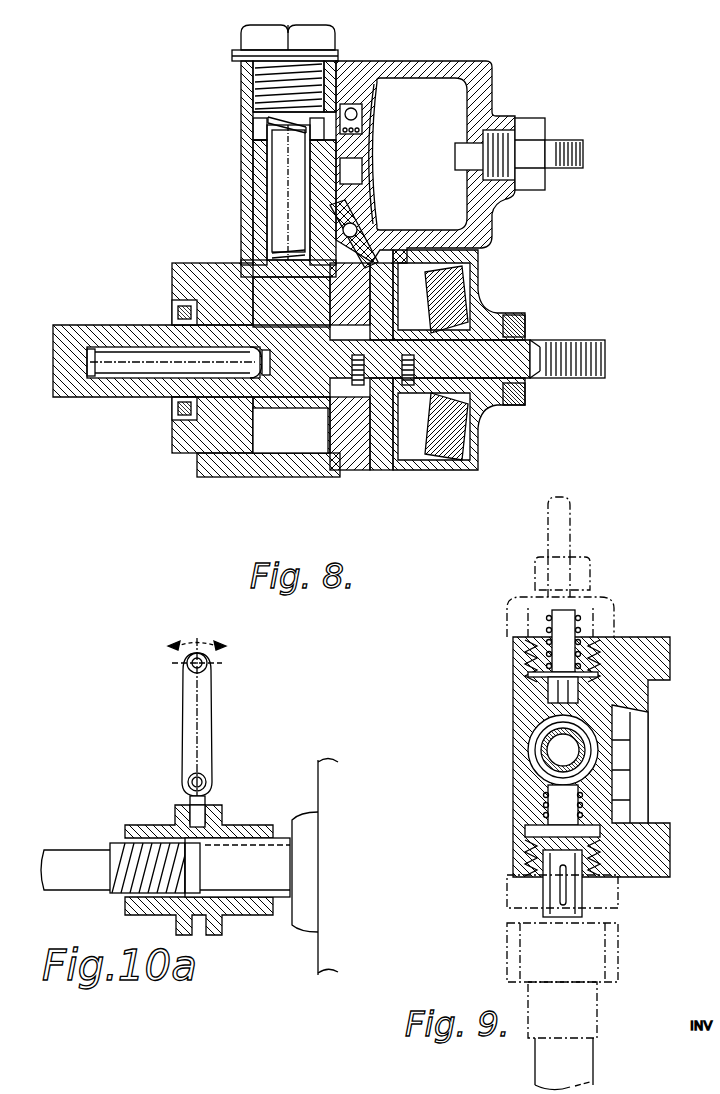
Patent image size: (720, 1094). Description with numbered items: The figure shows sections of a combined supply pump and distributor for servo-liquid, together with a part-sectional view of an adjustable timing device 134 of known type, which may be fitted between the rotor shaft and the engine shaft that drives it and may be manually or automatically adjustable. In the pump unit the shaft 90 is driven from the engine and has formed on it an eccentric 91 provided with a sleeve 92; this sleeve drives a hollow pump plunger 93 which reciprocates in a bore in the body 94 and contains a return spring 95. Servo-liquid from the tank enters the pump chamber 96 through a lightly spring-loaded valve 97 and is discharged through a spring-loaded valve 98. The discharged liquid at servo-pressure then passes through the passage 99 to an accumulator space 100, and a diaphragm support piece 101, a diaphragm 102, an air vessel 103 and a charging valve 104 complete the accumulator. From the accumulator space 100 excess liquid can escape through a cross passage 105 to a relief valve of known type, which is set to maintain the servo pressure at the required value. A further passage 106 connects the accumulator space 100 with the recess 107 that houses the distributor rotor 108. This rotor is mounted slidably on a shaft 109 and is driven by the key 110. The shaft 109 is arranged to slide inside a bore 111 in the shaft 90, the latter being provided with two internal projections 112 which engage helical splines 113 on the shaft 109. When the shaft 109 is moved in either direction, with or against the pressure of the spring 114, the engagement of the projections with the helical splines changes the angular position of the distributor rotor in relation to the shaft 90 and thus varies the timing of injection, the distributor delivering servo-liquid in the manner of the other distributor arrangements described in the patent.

In FIG. 8, the shaft 90 is at (70, 333).
In FIG. 8, the eccentric 91 is at (257, 297).
In FIG. 8, the sleeve 92 is at (255, 285).
In FIG. 8, the hollow pump plunger 93 is at (267, 197).
In FIG. 8, the body 94 is at (253, 187).
In FIG. 8, the return spring 95 is at (262, 120).
In FIG. 8, the pump chamber 96 is at (253, 133).
In FIG. 9, the lightly spring-loaded valve 97 is at (552, 890).
In FIG. 9, the spring-loaded valve 98 is at (550, 690).
In FIG. 8, the passage 99 is at (344, 108).
In FIG. 9, the passage 99 is at (597, 690).
In FIG. 8, the accumulator space 100 is at (375, 108).
In FIG. 8, the diaphragm support piece 101 is at (364, 115).
In FIG. 8, the diaphragm 102 is at (373, 136).
In FIG. 8, the air vessel 103 is at (483, 97).
In FIG. 8, the charging valve 104 is at (505, 135).
In FIG. 8, the cross passage 105 is at (357, 228).
In FIG. 8, the passage 106 is at (362, 247).
In FIG. 8, the recess 107 is at (383, 265).
In FIG. 8, the distributor rotor 108 is at (385, 320).
In FIG. 8, the shaft 109 is at (522, 368).
In FIG. 8, the key 110 is at (433, 470).
In FIG. 8, the bore 111 is at (245, 398).
In FIG. 8, the internal projections 112 is at (305, 410).
In FIG. 8, the helical splines 113 is at (272, 392).
In FIG. 8, the spring 114 is at (237, 380).
In FIG. 10A, the timing device 134 is at (229, 820).